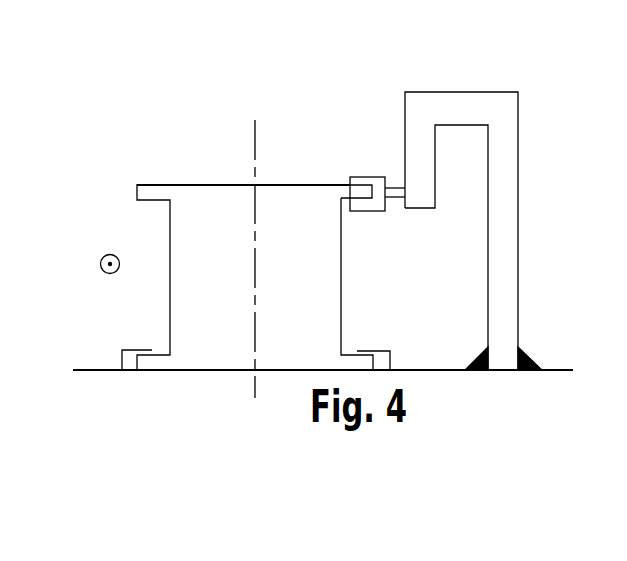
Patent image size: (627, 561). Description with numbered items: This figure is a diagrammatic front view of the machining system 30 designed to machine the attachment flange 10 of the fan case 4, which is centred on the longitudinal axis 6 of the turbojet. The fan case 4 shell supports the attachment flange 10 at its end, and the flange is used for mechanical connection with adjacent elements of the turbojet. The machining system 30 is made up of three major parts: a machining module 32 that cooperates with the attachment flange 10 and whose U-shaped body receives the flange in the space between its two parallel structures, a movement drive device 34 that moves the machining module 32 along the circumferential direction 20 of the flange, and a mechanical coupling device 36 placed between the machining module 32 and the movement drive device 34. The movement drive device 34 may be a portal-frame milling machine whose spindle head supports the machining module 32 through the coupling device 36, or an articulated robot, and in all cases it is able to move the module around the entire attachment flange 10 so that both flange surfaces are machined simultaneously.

The fan case 4 is at (193, 387).
The longitudinal axis 6 is at (253, 152).
The attachment flange 10 is at (145, 190).
The circumferential direction 20 is at (100, 266).
The machining system 30 is at (548, 273).
The machining module 32 is at (363, 176).
The movement drive device 34 is at (507, 76).
The mechanical coupling device 36 is at (398, 187).